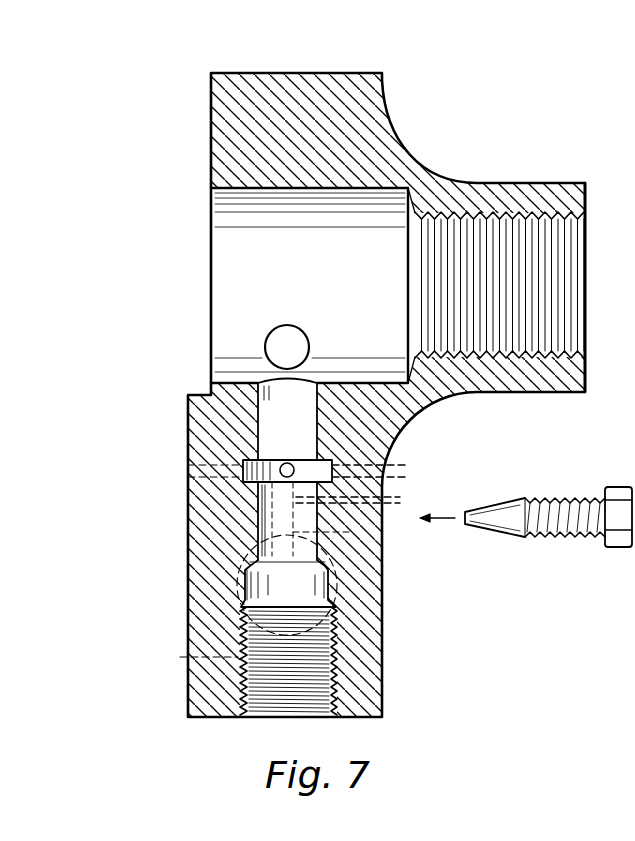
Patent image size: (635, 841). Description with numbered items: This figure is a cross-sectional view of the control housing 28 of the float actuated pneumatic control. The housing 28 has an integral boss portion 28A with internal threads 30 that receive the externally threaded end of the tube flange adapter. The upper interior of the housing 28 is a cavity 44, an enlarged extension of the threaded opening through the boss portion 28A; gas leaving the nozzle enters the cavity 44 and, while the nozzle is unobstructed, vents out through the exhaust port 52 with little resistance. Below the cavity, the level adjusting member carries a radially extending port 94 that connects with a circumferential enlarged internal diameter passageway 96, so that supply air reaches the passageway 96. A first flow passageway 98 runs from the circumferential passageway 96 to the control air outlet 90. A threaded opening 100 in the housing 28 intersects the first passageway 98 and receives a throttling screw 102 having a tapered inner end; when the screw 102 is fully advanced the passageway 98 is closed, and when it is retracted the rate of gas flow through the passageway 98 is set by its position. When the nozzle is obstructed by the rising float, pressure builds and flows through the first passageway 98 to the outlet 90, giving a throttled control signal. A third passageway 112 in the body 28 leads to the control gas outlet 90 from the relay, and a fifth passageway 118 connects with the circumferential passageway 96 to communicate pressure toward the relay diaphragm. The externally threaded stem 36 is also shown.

The control housing 28 is at (358, 578).
The boss portion 28A is at (558, 375).
The internal threads 30 is at (560, 348).
The threaded stem 36 is at (243, 665).
The cavity 44 is at (220, 270).
The exhaust port 52 is at (303, 346).
The control air outlet 90 is at (343, 612).
The radially extending port 94 is at (287, 462).
The circumferential passageway 96 is at (328, 462).
The first flow passageway 98 is at (335, 482).
The threaded opening 100 is at (385, 497).
The throttling screw 102 is at (563, 497).
The third passageway 112 is at (240, 653).
The fifth passageway 118 is at (243, 470).